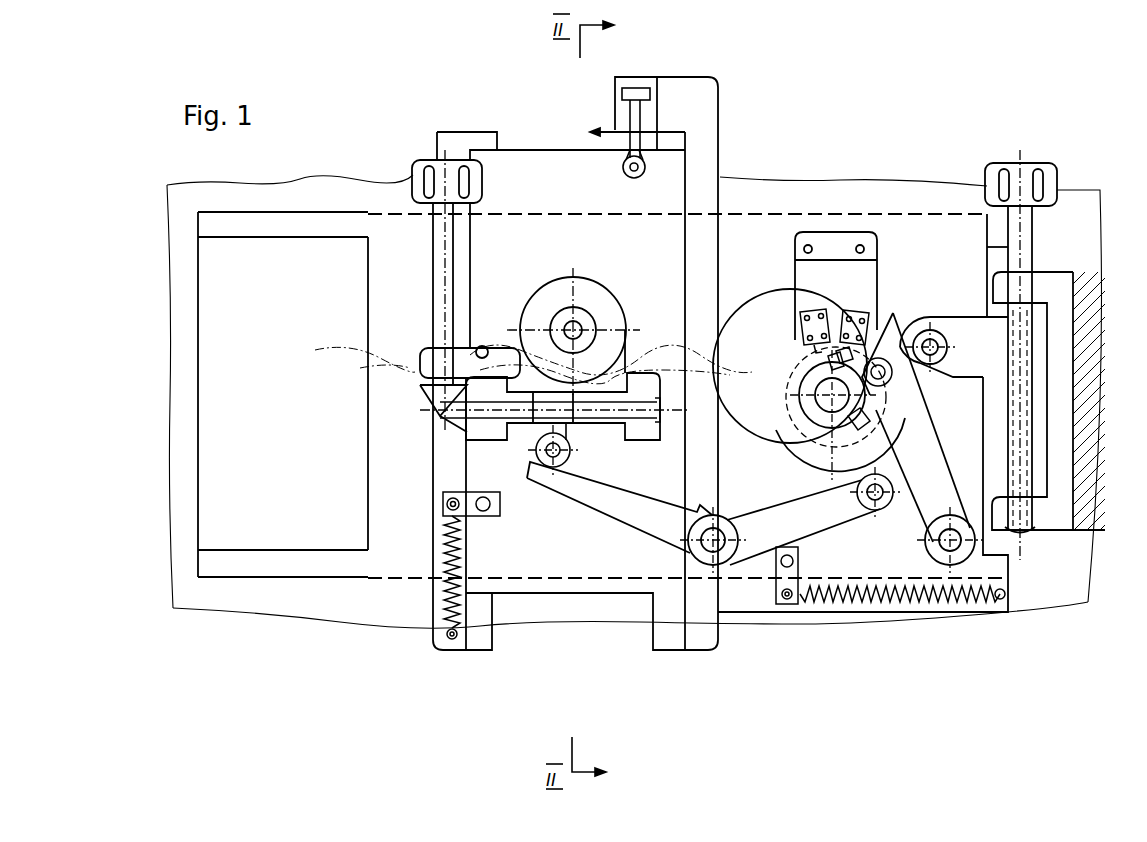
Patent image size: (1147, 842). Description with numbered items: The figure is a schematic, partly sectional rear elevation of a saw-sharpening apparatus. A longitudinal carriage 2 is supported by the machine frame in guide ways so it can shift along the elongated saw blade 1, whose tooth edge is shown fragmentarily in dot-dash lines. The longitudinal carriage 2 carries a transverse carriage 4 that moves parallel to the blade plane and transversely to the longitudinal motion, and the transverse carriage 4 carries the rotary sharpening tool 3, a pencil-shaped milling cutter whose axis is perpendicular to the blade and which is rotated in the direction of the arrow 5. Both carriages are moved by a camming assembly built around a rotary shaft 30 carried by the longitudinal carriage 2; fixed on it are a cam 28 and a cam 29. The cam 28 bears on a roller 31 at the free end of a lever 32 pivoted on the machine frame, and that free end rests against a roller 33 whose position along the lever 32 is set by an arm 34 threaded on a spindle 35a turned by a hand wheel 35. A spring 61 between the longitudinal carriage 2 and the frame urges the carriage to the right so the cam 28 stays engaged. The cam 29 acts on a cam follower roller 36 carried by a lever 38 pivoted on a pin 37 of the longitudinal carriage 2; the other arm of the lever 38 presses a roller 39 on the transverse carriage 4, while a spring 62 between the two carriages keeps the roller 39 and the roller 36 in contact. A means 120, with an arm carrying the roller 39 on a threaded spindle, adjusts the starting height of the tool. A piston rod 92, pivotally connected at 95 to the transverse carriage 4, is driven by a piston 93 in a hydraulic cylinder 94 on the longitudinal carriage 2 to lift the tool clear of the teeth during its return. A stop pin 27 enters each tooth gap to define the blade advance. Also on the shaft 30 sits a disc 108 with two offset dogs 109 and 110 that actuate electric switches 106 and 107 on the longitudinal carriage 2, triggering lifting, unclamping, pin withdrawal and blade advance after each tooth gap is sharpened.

The saw blade 1 is at (407, 338).
The longitudinal carriage 2 is at (838, 232).
The rotary sharpening tool 3 is at (570, 320).
The transverse carriage 4 is at (595, 172).
The arrow 5 is at (584, 313).
The stop pin 27 is at (482, 352).
The cam 28 is at (752, 323).
The cam 29 is at (812, 462).
The rotary shaft 30 is at (829, 404).
The roller 31 is at (881, 335).
The lever 32 is at (918, 447).
The roller 33 is at (920, 325).
The arm 34 is at (965, 338).
The hand wheel 35 is at (1037, 180).
The threaded spindle 35a is at (1013, 470).
The cam follower roller 36 is at (878, 500).
The pin 37 is at (710, 547).
The lever 38 is at (769, 535).
The roller 39 is at (556, 465).
The spring 61 is at (958, 598).
The spring 62 is at (437, 608).
The piston rod 92 is at (634, 140).
The piston 93 is at (643, 92).
The hydraulic cylinder 94 is at (623, 80).
The pivotal connection 95 is at (641, 177).
The electric switch 106 is at (850, 322).
The electric switch 107 is at (817, 320).
The disc 108 is at (811, 378).
The dog 109 is at (863, 422).
The dog 110 is at (833, 354).
The adjusting means 120 is at (555, 564).